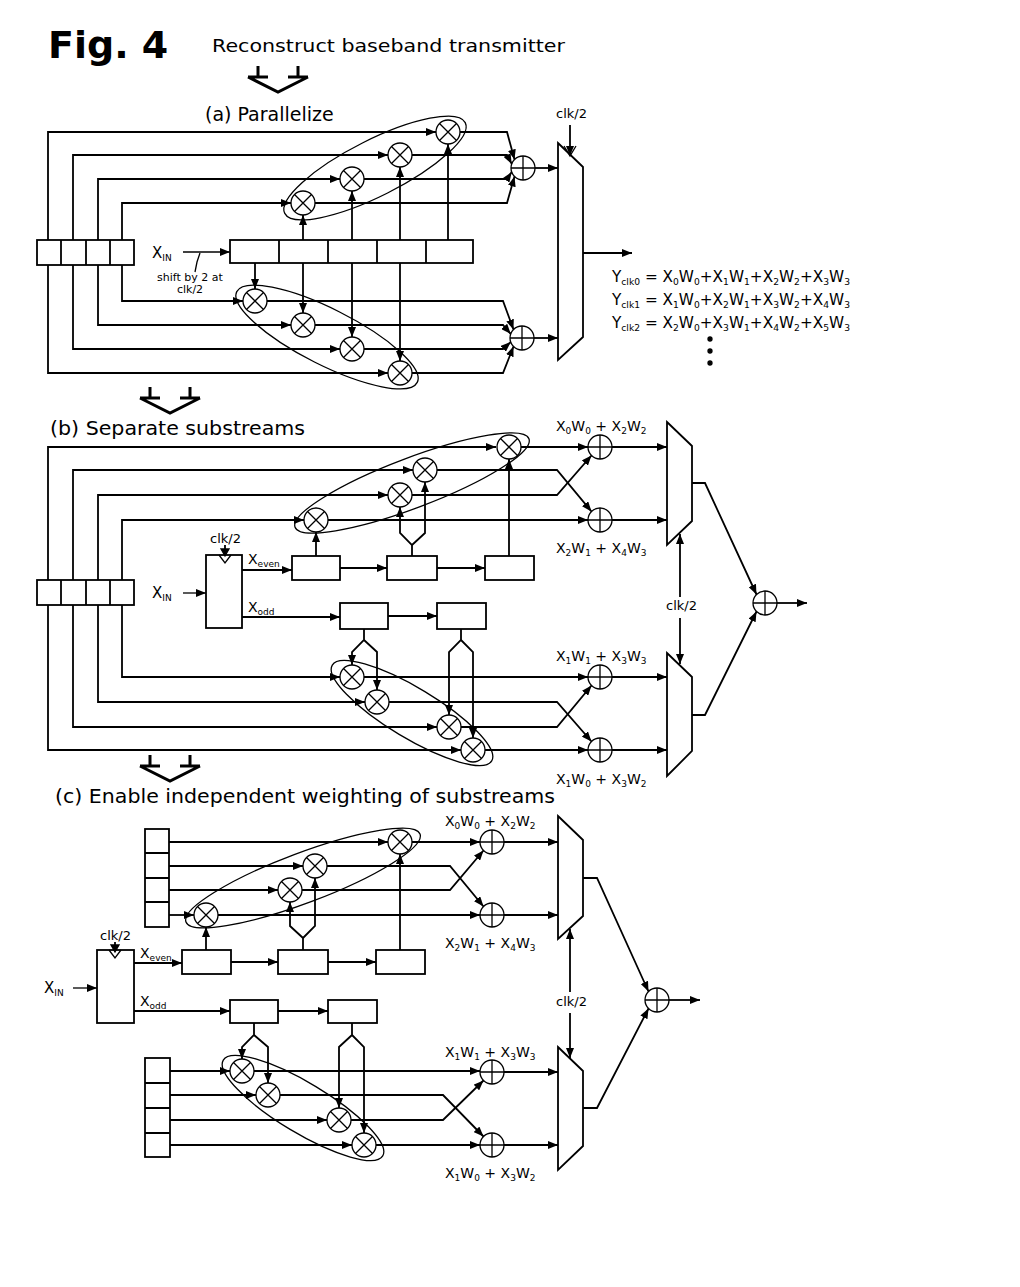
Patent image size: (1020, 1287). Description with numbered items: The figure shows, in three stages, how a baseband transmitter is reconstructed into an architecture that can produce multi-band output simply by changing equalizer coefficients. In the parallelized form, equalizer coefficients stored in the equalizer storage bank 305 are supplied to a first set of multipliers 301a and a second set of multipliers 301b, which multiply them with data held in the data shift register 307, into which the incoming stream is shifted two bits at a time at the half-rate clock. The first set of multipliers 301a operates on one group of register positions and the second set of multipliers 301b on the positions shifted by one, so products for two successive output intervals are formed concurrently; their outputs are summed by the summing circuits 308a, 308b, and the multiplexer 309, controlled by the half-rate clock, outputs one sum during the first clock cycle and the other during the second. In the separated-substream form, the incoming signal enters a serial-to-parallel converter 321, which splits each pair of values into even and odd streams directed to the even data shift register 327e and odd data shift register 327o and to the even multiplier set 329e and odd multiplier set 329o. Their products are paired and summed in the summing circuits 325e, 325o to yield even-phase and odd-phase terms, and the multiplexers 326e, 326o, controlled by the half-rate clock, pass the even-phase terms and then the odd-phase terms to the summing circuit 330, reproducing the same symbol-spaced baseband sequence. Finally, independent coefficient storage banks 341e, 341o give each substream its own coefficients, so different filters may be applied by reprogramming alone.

The first set of multipliers 301a is at (441, 104).
The second set of multipliers 301b is at (413, 392).
The equalizer storage bank 305 is at (128, 240).
The data shift register 307 is at (245, 240).
The summing circuit 308a is at (519, 181).
The summing circuit 308b is at (520, 326).
The multiplexer 309 is at (583, 201).
The serial-to-parallel converter 321 is at (215, 628).
The summing circuits 325e is at (612, 456).
The summing circuits 325o is at (612, 686).
The multiplexer 326e is at (692, 471).
The multiplexer 326o is at (692, 727).
The even data shift register 327e is at (540, 572).
The odd data shift register 327o is at (492, 614).
The even multiplier set 329e is at (491, 433).
The odd multiplier set 329o is at (337, 666).
The summing circuit 330 is at (774, 612).
The independent coefficient storage bank 341e is at (143, 853).
The independent coefficient storage bank 341o is at (143, 1093).